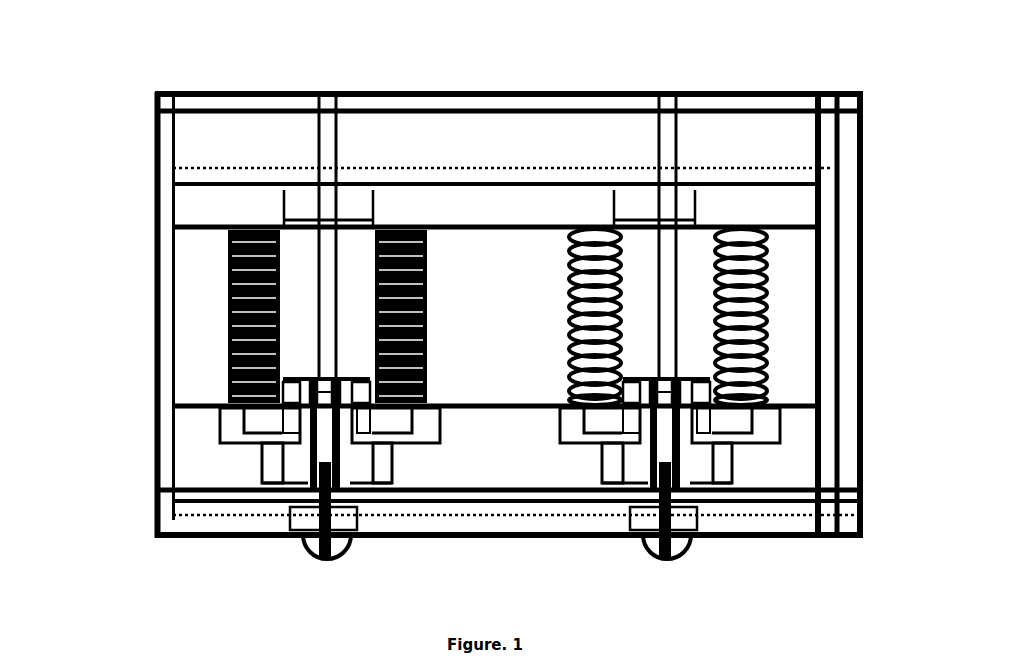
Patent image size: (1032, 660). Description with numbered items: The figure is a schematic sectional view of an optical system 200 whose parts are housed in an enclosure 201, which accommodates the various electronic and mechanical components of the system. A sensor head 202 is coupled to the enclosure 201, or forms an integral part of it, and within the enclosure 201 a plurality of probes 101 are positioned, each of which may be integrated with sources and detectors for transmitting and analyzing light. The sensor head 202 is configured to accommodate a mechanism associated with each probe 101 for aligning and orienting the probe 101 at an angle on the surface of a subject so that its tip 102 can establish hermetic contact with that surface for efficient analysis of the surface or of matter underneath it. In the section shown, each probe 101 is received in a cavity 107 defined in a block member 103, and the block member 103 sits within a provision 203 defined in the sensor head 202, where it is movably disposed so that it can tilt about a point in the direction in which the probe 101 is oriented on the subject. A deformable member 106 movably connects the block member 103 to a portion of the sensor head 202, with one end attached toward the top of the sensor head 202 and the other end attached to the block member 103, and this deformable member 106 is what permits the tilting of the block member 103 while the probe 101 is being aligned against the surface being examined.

The optical system 200 is at (140, 90).
The enclosure 201 is at (722, 93).
The sensor head 202 is at (201, 379).
The deformable member 106 is at (247, 323).
The block member 103 is at (262, 423).
The cavity 107 is at (683, 461).
The probe 101 is at (670, 439).
The provision 203 is at (613, 470).
The tip 102 is at (318, 553).